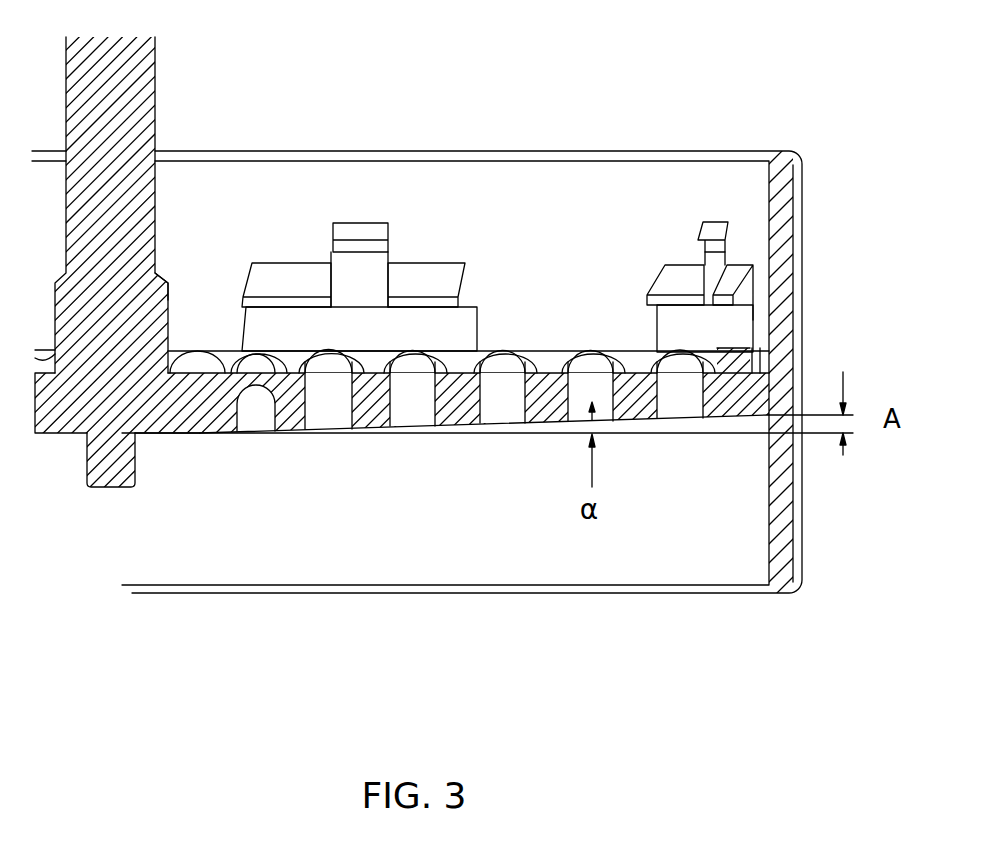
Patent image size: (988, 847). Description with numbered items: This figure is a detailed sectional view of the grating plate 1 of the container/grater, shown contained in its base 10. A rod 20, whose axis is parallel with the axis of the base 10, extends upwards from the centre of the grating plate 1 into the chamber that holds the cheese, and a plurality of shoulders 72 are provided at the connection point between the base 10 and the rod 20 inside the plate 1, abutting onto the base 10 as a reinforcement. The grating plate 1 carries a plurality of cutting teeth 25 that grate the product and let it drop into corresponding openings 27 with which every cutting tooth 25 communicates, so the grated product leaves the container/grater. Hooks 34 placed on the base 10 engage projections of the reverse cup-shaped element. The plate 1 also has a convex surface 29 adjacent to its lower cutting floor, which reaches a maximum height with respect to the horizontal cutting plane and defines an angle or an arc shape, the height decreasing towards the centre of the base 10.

The base 10 is at (549, 193).
The rod 20 is at (133, 103).
The shoulders 72 is at (167, 287).
The grating plate 1 is at (738, 378).
The openings 27 is at (503, 397).
The cutting teeth 25 is at (600, 352).
The convex surface 29 is at (636, 419).
The hooks 34 is at (370, 290).